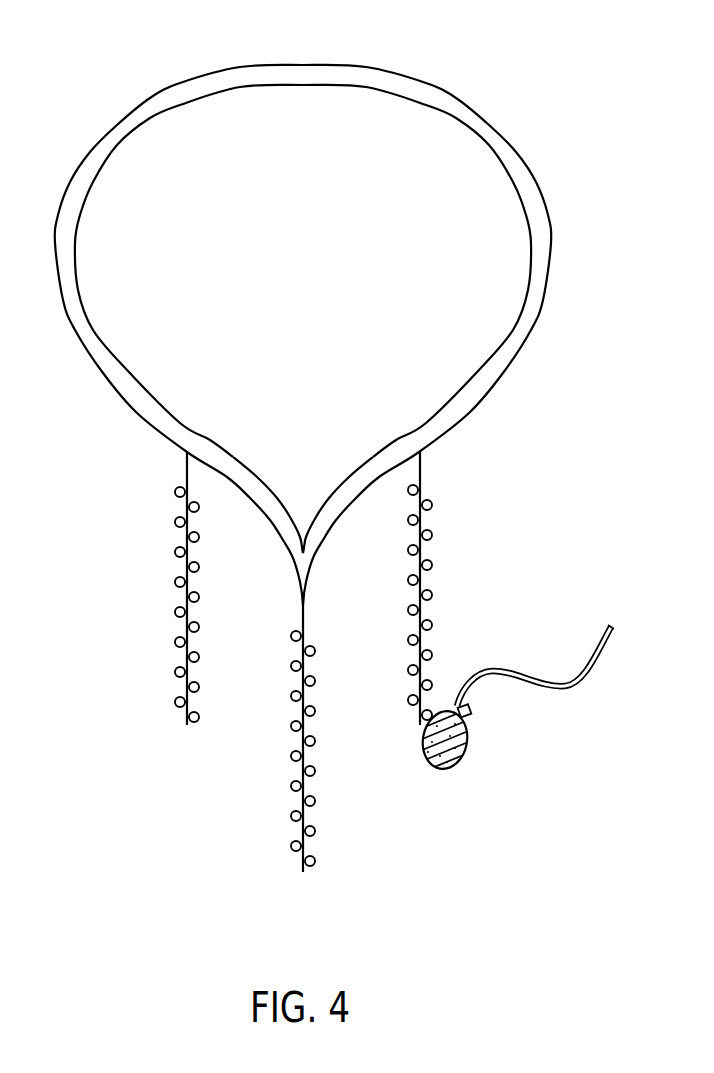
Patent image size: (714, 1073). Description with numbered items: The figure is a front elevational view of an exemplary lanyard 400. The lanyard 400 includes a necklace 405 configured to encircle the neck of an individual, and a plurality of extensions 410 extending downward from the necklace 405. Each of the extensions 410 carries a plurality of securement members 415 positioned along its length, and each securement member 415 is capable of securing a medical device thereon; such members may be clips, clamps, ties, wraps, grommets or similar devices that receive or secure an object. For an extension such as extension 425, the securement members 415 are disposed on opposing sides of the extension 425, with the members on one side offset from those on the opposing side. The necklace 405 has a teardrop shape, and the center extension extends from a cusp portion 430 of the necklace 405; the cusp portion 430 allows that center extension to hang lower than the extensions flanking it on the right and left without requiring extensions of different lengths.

The lanyard 400 is at (553, 64).
The necklace 405 is at (520, 335).
The extensions 410 is at (104, 596).
The securement members 415 is at (291, 728).
The extension 425 is at (355, 772).
The cusp portion 430 is at (308, 483).